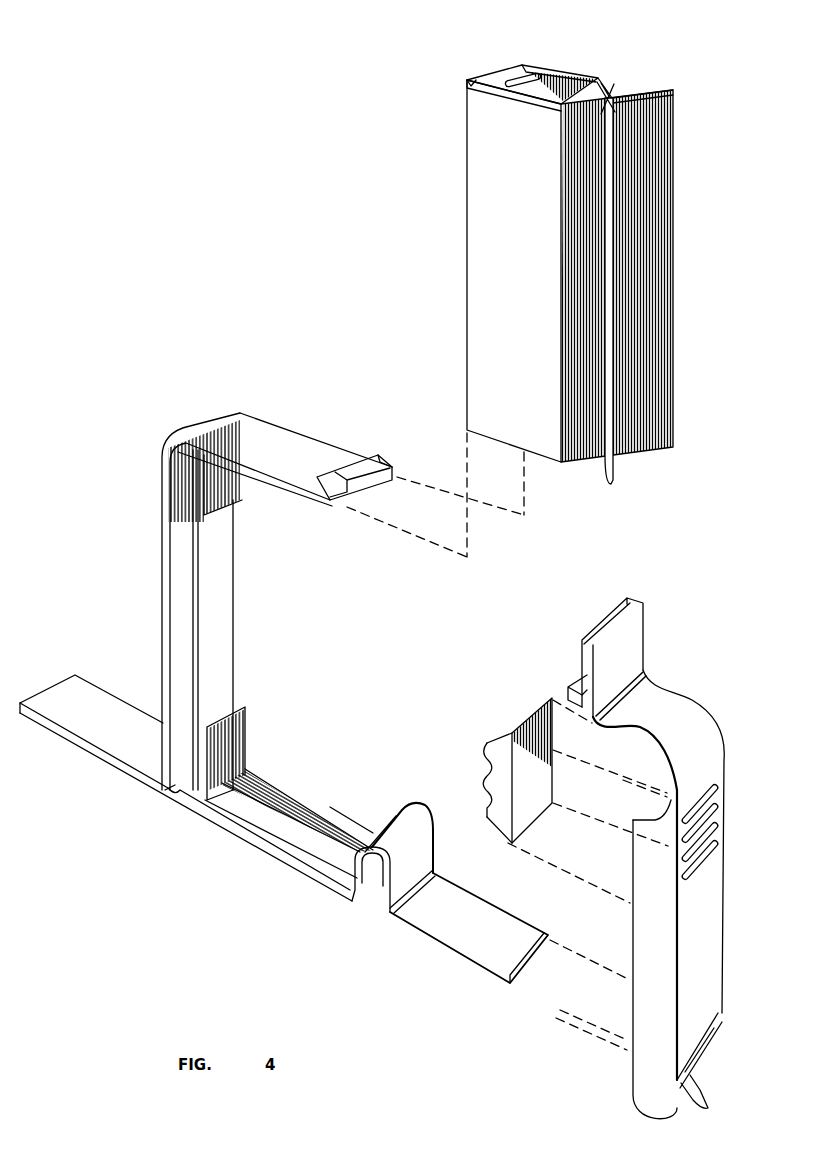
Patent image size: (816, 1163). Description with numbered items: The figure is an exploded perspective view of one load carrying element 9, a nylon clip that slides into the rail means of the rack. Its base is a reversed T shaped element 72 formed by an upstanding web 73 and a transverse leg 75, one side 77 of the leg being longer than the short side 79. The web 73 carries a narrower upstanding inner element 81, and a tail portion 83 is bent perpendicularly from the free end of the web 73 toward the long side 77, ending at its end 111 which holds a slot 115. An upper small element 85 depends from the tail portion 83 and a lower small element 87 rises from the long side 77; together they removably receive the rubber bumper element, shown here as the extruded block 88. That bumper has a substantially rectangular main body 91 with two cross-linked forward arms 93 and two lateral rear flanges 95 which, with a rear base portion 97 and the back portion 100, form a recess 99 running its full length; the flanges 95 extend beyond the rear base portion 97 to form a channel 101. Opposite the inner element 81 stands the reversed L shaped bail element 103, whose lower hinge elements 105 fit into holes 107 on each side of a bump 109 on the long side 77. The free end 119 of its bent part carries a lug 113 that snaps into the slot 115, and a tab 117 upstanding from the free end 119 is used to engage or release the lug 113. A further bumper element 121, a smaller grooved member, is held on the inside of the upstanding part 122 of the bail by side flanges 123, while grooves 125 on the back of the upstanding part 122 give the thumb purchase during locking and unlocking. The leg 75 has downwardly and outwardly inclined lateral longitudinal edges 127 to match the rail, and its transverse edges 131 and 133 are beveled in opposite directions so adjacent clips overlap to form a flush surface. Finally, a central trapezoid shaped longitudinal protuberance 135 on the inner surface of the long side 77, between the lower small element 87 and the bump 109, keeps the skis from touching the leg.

The carrying element 9 is at (270, 352).
The reversed T shaped element 72 is at (252, 600).
The upstanding web 73 is at (172, 582).
The transverse leg 75 is at (311, 817).
The long side of the leg 77 is at (280, 857).
The short side of the leg 79 is at (127, 770).
The upstanding inner element 81 is at (223, 625).
The tail portion 83 is at (289, 437).
The upper small element 85 is at (236, 493).
The lower small element 87 is at (239, 738).
The channel extrusion 88 is at (548, 244).
The main body 91 is at (609, 82).
The cross-linked forward arms 93 is at (632, 96).
The lateral rear flanges 95 is at (462, 94).
The rear base portion 97 is at (522, 74).
The recess 99 is at (542, 72).
The back portion 100 is at (572, 72).
The channel 101 is at (503, 70).
The bail element 103 is at (653, 850).
The hinge elements 105 is at (699, 1093).
The holes 107 is at (368, 873).
The bump 109 is at (410, 817).
The end of the tail portion 111 is at (394, 477).
The lug 113 is at (567, 680).
The slot 115 is at (353, 465).
The tab 117 is at (639, 613).
The free end of the bail 119 is at (624, 681).
The further bumper element 121 is at (513, 842).
The upstanding part of the bail element 122 is at (704, 877).
The side flanges 123 is at (642, 1050).
The grooves 125 is at (716, 814).
The lateral longitudinal edges 127 is at (212, 825).
The transverse edge of the long side 131 is at (548, 940).
The transverse edge of the short side 133 is at (57, 683).
The central trapezoid shaped longitudinal protuberance 135 is at (315, 834).